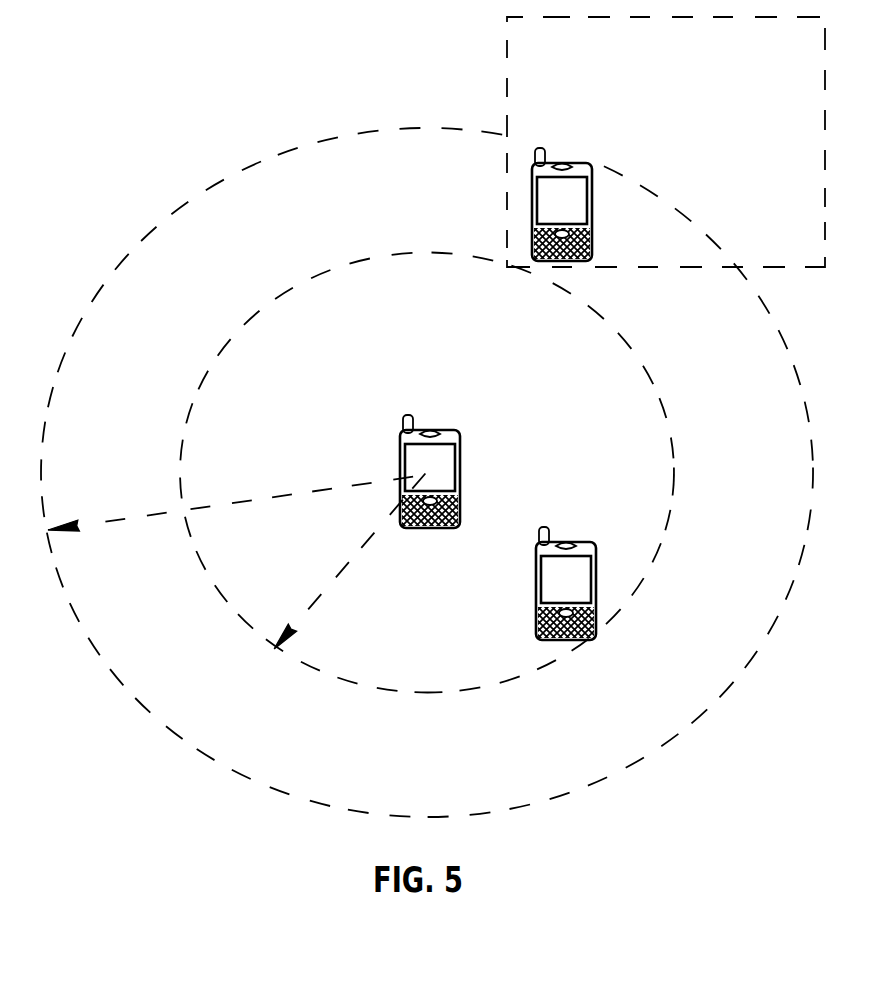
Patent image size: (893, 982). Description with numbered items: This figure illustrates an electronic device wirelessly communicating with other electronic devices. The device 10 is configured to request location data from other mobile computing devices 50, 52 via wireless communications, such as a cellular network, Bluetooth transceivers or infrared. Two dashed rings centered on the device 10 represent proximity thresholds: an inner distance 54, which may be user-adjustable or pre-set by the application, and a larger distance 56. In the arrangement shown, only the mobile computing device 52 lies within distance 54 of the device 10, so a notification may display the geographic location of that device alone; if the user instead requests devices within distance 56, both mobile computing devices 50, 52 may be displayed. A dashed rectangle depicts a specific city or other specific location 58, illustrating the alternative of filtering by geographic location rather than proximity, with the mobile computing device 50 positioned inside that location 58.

The device 10 is at (437, 432).
The mobile computing device 50 is at (555, 165).
The mobile computing device 52 is at (560, 545).
The distance 54 is at (316, 603).
The distance 56 is at (112, 521).
The specific location 58 is at (507, 88).